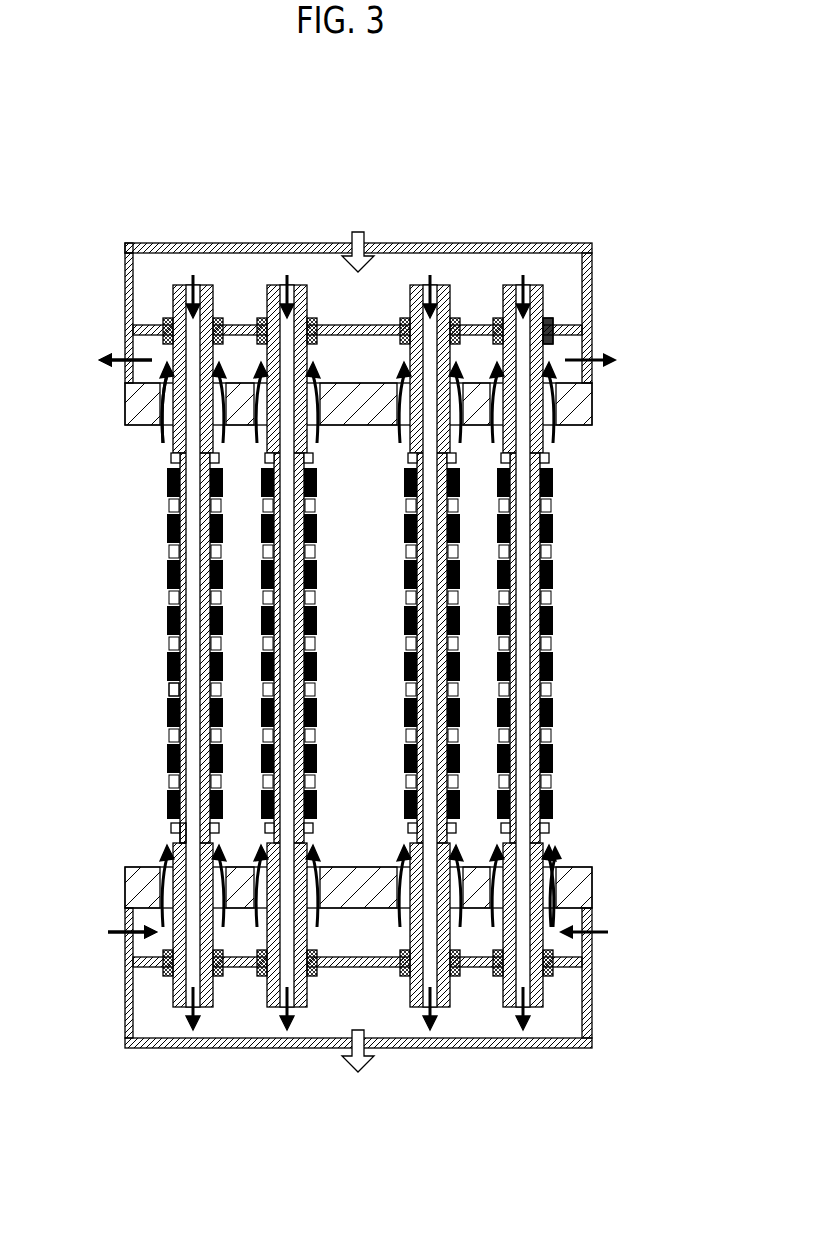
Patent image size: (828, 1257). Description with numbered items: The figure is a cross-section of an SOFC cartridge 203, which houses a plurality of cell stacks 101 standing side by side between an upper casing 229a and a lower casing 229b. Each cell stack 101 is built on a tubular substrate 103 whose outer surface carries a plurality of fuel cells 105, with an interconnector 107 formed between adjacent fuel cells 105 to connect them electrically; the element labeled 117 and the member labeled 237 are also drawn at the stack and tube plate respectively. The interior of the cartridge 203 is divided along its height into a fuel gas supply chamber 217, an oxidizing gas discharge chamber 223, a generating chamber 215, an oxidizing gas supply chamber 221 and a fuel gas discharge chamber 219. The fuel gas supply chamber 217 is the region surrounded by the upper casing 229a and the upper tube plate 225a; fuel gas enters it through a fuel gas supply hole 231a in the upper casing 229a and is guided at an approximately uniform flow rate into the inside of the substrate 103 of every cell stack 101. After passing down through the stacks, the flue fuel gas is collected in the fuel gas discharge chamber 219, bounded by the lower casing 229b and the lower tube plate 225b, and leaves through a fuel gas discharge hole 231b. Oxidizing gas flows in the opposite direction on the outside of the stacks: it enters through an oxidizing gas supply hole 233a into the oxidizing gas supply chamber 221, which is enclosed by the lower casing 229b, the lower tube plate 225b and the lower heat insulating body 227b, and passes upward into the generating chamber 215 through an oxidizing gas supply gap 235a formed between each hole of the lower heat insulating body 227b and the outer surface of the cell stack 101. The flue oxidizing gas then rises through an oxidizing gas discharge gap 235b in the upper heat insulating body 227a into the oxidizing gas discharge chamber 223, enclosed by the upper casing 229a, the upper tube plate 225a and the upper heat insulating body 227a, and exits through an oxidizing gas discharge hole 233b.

The cell stack 101 is at (153, 637).
The substrate 103 is at (168, 782).
The fuel cell 105 is at (167, 565).
The interconnector 107 is at (167, 690).
The support tube (lead portion) 117 is at (167, 838).
The SOFC cartridge 203 is at (186, 178).
The generating chamber 215 is at (572, 609).
The fuel gas supply chamber 217 is at (145, 274).
The fuel gas discharge chamber 219 is at (148, 1007).
The oxidizing gas supply chamber 221 is at (143, 915).
The oxidizing gas discharge chamber 223 is at (146, 345).
The upper tube plate 225a is at (578, 333).
The lower tube plate 225b is at (567, 965).
The upper heat insulating body 227a is at (580, 400).
The lower heat insulating body 227b is at (578, 885).
The upper casing 229a is at (437, 243).
The lower casing 229b is at (597, 1020).
The fuel gas supply hole 231a is at (340, 243).
The fuel gas discharge hole 231b is at (375, 1048).
The oxidizing gas supply hole 233a is at (608, 929).
The oxidizing gas discharge hole 233b is at (590, 355).
The oxidizing gas supply gap 235a is at (589, 866).
The oxidizing gas discharge gap 235b is at (158, 426).
The fixing member (seal) 237 is at (548, 318).